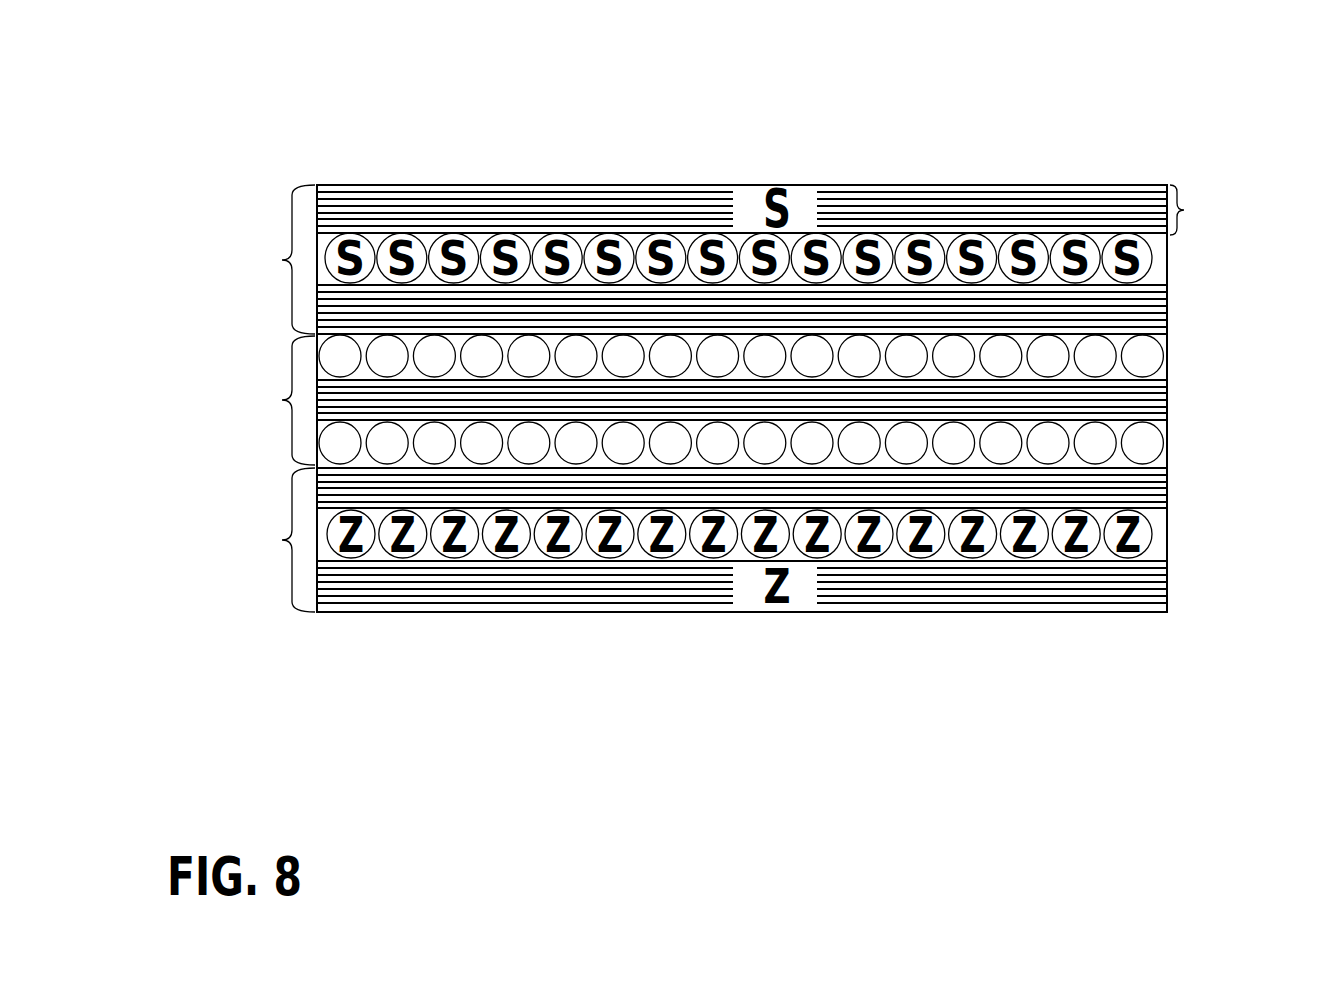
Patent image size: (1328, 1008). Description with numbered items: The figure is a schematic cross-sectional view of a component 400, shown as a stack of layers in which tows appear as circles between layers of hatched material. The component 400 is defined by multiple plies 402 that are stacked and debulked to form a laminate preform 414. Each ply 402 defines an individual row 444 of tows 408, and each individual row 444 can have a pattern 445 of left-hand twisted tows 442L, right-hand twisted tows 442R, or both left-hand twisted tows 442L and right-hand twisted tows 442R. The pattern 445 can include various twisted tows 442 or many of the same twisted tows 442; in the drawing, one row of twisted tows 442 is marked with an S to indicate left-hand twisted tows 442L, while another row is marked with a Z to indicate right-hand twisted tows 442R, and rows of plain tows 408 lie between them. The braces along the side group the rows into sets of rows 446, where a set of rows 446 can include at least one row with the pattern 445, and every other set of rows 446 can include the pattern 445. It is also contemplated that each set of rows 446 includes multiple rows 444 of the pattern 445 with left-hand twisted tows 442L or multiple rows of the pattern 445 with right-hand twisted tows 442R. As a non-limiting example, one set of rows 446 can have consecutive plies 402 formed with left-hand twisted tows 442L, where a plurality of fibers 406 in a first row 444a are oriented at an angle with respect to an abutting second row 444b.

The component 400 is at (472, 82).
The ply 402 is at (773, 162).
The fibers 406 is at (742, 162).
The tows 408 is at (1152, 446).
The laminate preform 414 is at (832, 188).
The twisted tows 442 is at (812, 192).
The left-hand twisted tows 442L is at (1138, 262).
The right-hand twisted tows 442R is at (542, 545).
The individual row 444 is at (1180, 308).
The first row 444a is at (988, 198).
The second row 444b is at (1050, 240).
The pattern 445 is at (1124, 226).
The set of rows 446 is at (273, 398).